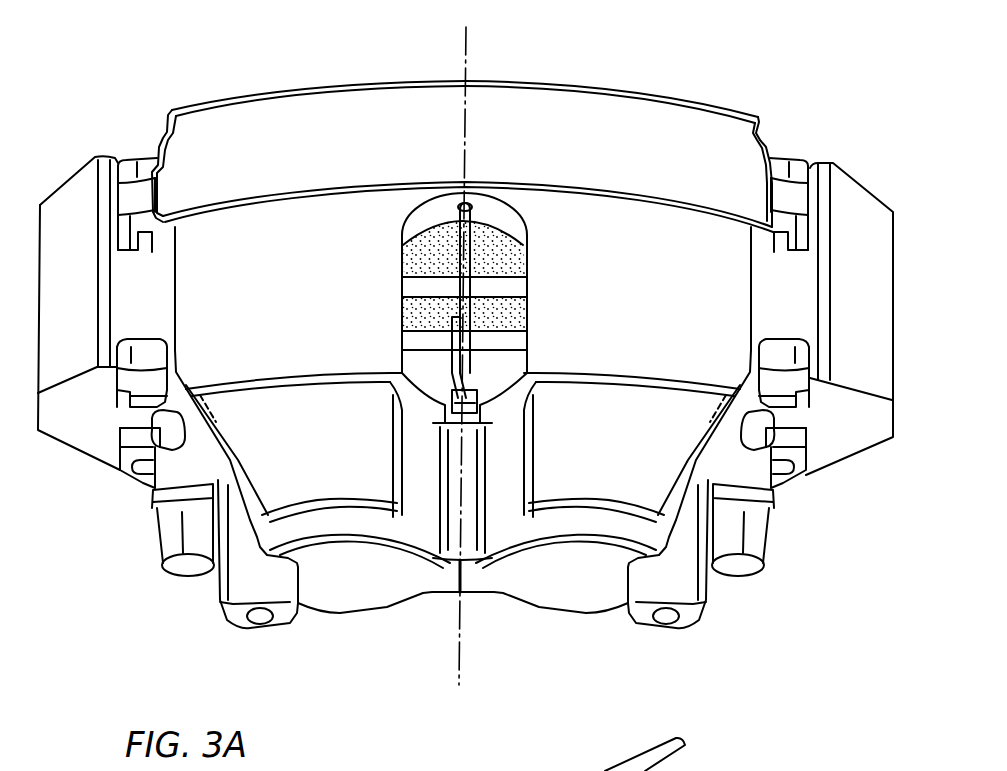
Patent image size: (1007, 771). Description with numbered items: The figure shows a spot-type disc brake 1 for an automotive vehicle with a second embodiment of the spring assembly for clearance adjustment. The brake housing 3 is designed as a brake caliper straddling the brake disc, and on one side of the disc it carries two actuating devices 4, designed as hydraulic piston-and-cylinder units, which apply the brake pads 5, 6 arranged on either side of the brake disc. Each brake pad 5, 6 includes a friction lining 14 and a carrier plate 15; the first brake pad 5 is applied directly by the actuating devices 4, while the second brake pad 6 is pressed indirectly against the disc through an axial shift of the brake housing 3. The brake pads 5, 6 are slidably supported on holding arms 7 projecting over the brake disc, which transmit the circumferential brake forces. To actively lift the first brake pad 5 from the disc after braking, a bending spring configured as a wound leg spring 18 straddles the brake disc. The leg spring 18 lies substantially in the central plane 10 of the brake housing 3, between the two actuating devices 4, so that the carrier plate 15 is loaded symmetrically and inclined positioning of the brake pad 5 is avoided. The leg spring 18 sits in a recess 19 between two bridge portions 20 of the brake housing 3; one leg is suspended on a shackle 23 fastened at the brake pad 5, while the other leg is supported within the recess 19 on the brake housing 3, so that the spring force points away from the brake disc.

The spot-type disc brake 1 is at (712, 67).
The brake housing 3 is at (518, 117).
The actuating device 4 is at (363, 587).
The first brake pad 5 is at (148, 345).
The second brake pad 6 is at (148, 158).
The holding arm 7 is at (845, 212).
The central plane 10 is at (460, 648).
The friction lining 14 is at (507, 315).
The carrier plate 15 is at (507, 345).
The leg spring 18 is at (450, 347).
The recess 19 is at (430, 212).
The bridge portion 20 is at (300, 299).
The shackle 23 is at (488, 400).